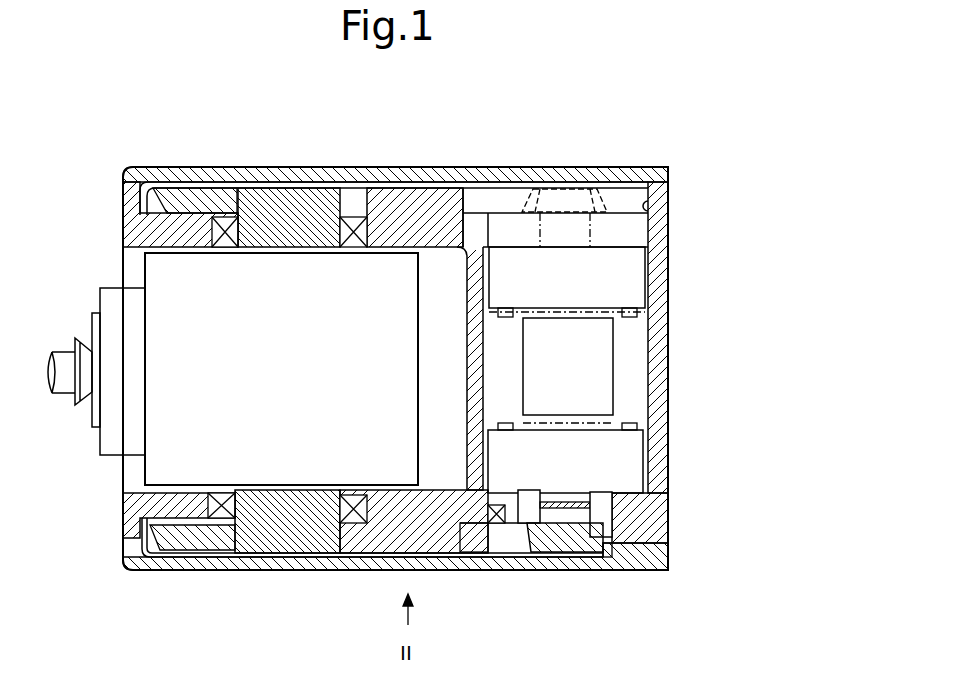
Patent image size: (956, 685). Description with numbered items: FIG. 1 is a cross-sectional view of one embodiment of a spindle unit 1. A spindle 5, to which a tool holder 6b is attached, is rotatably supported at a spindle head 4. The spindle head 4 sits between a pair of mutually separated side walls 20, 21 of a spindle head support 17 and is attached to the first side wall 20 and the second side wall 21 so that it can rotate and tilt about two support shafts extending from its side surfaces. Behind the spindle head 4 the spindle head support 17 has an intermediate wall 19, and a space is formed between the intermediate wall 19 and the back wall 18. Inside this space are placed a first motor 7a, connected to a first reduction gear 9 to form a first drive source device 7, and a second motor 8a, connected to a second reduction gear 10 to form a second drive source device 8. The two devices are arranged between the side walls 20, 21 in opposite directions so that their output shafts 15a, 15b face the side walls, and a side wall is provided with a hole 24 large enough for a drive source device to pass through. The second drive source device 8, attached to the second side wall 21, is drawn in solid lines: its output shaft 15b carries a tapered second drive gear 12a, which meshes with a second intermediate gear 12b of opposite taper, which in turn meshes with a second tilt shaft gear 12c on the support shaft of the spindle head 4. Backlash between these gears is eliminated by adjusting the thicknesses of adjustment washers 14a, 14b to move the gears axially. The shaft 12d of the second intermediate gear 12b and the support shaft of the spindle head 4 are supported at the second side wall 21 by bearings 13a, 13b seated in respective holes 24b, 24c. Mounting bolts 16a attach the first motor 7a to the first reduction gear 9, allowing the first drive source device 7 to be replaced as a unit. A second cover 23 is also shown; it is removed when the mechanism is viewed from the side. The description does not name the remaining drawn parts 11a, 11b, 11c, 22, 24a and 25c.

The motor 1 is at (684, 136).
The spindle head 4 is at (160, 331).
The spindle 5 is at (92, 426).
The tool holder 6b is at (79, 358).
The first drive source device 7 is at (742, 233).
The first motor 7a is at (597, 300).
The second drive source device 8 is at (742, 318).
The second motor 8a is at (600, 340).
The first reduction gear 9 is at (648, 252).
The second reduction gear 10 is at (615, 456).
The magnet 11a is at (567, 198).
The rotor flange 11b is at (466, 202).
The rotor hub 11c is at (253, 207).
The second drive gear 12a is at (598, 566).
The second intermediate gear 12b is at (478, 532).
The second tilt shaft gear 12c is at (302, 542).
The shaft of the second intermediate gear 12d is at (522, 522).
The bearing 13a is at (539, 550).
The bearing 13b is at (236, 542).
The adjustment washer 14a is at (566, 508).
The adjustment washer 14b is at (490, 520).
The output shaft 15a is at (655, 230).
The output shaft 15b is at (605, 484).
The mounting bolts 16a is at (514, 422).
The spindle head support 17 is at (112, 516).
The back wall 18 is at (660, 305).
The intermediate wall 19 is at (470, 330).
The first side wall 20 is at (412, 210).
The second side wall 21 is at (357, 542).
The top plate 22 is at (170, 181).
The second cover 23 is at (176, 560).
The hole 24 is at (650, 203).
The bracket block 24a is at (645, 503).
The hole 24b is at (455, 546).
The hole 24c is at (340, 556).
The spacer 25c is at (230, 214).